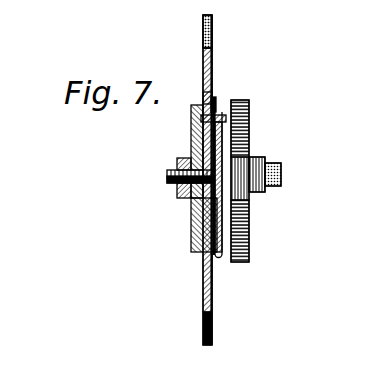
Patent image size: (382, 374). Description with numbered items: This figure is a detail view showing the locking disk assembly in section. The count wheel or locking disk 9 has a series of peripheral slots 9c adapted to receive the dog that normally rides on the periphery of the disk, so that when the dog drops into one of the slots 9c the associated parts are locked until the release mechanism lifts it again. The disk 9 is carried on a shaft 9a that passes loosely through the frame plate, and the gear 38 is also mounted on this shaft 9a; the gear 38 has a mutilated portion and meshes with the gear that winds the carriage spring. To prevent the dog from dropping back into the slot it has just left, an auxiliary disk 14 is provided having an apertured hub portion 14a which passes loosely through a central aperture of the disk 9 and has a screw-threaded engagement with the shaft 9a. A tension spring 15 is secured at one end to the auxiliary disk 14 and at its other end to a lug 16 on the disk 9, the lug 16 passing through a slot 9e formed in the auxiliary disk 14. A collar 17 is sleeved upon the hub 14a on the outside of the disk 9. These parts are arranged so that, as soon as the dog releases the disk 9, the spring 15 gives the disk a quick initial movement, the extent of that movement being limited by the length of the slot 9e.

The count wheel or locking disk 9 is at (222, 57).
The peripheral slots 9c is at (222, 21).
The slot 9e is at (203, 97).
The shaft 9a is at (282, 179).
The auxiliary disk 14 is at (200, 138).
The apertured hub portion 14a is at (177, 163).
The tension spring 15 is at (217, 257).
The lug 16 is at (222, 112).
The collar 17 is at (192, 235).
The gear 38 is at (252, 128).